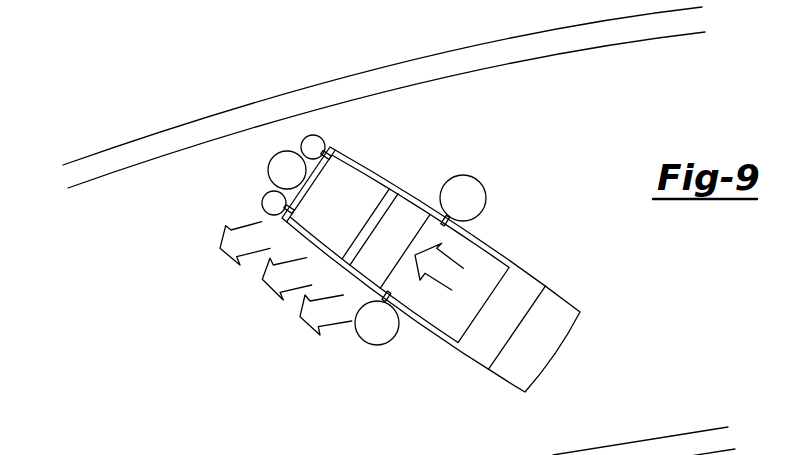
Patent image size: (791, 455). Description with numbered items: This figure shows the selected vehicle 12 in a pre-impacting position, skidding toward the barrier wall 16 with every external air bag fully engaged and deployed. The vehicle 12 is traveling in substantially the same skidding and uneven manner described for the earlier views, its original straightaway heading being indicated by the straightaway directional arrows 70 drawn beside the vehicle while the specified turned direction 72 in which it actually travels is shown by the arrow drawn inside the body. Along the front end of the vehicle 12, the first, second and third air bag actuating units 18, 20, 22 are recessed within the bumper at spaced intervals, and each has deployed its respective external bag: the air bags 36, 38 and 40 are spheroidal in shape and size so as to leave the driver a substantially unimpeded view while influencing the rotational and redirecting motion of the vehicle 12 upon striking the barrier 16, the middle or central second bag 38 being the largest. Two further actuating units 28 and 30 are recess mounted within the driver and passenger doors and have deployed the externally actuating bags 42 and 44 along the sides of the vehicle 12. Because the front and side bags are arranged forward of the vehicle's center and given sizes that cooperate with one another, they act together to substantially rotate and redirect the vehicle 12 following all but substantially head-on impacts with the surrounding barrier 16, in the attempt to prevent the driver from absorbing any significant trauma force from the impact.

The first selected vehicle 12 is at (467, 378).
The barrier wall 16 is at (425, 88).
The first air bag actuating unit 18 is at (289, 210).
The second air bag actuating unit 20 is at (317, 186).
The third air bag actuating unit 22 is at (322, 160).
The air bag actuating unit 28 is at (388, 299).
The air bag actuating unit 30 is at (452, 237).
The air bag 36 is at (270, 204).
The second air bag 38 is at (285, 157).
The air bag 40 is at (315, 142).
The externally actuating bag 42 is at (358, 327).
The externally actuating bag 44 is at (467, 185).
The straightaway directional arrows 70 is at (270, 282).
The turned direction arrow 72 is at (449, 276).